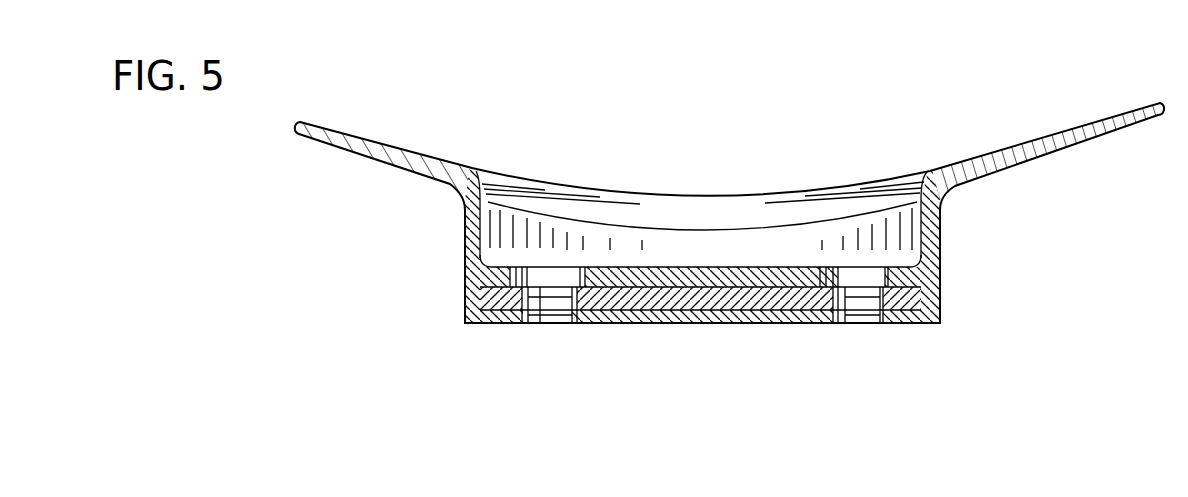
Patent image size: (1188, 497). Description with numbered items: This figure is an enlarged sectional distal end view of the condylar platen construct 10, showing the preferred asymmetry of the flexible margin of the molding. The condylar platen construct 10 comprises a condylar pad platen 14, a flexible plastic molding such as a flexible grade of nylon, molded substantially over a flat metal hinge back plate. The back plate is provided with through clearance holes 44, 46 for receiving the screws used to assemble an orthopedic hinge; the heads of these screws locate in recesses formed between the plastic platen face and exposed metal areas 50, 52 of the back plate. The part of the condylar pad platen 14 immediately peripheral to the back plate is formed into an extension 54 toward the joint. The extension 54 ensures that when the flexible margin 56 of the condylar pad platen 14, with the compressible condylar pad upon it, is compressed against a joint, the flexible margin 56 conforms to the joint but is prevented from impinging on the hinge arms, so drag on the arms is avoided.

The condylar platen construct 10 is at (948, 200).
The condylar pad platen 14 is at (460, 197).
The through clearance hole 44 is at (568, 278).
The through clearance hole 46 is at (850, 273).
The exposed metal area 50 is at (528, 283).
The exposed metal area 52 is at (887, 267).
The extension 54 is at (465, 266).
The flexible margin 56 is at (348, 152).